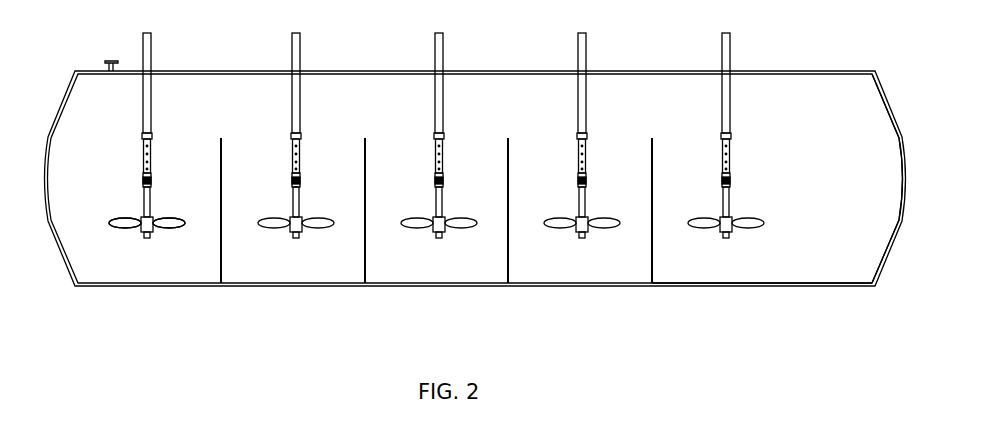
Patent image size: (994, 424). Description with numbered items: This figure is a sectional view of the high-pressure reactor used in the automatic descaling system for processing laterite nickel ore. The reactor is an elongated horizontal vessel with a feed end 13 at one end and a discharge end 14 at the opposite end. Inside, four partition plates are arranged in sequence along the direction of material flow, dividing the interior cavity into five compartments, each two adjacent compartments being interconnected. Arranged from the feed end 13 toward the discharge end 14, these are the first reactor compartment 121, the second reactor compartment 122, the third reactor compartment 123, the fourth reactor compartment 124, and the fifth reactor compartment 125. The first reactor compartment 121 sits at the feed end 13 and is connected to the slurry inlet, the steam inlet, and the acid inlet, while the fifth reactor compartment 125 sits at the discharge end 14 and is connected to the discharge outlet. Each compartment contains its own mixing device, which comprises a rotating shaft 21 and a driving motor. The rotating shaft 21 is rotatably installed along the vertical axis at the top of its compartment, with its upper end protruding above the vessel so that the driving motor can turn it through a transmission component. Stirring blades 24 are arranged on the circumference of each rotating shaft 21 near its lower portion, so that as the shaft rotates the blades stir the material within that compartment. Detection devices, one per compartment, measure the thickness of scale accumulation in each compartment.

The feed end 13 is at (48, 158).
The discharge end 14 is at (900, 140).
The rotating shaft 21 is at (145, 40).
The stirring blades 24 is at (125, 225).
The first reactor compartment 121 is at (198, 273).
The second reactor compartment 122 is at (317, 273).
The third reactor compartment 123 is at (427, 273).
The fourth reactor compartment 124 is at (580, 273).
The fifth reactor compartment 125 is at (745, 272).